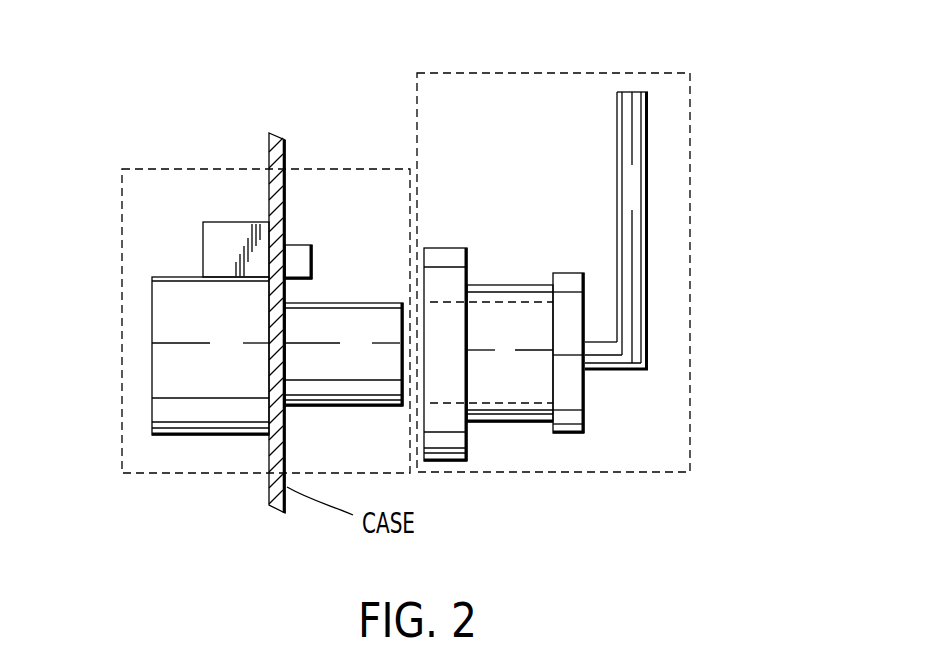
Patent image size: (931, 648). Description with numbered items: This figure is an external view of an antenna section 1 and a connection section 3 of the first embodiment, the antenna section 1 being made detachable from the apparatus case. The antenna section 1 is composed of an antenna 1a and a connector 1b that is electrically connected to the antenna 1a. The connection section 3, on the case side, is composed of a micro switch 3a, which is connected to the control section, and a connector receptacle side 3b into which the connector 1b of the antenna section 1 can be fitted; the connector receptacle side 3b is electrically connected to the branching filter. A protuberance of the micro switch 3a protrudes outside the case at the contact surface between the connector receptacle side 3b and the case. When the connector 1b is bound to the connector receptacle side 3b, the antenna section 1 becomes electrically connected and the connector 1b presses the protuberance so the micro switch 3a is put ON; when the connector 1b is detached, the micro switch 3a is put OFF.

The antenna section 1 is at (540, 73).
The antenna 1a is at (652, 368).
The connector 1b is at (505, 422).
The connection section 3 is at (138, 169).
The micro switch 3a is at (207, 243).
The connector receptacle side 3b is at (180, 437).